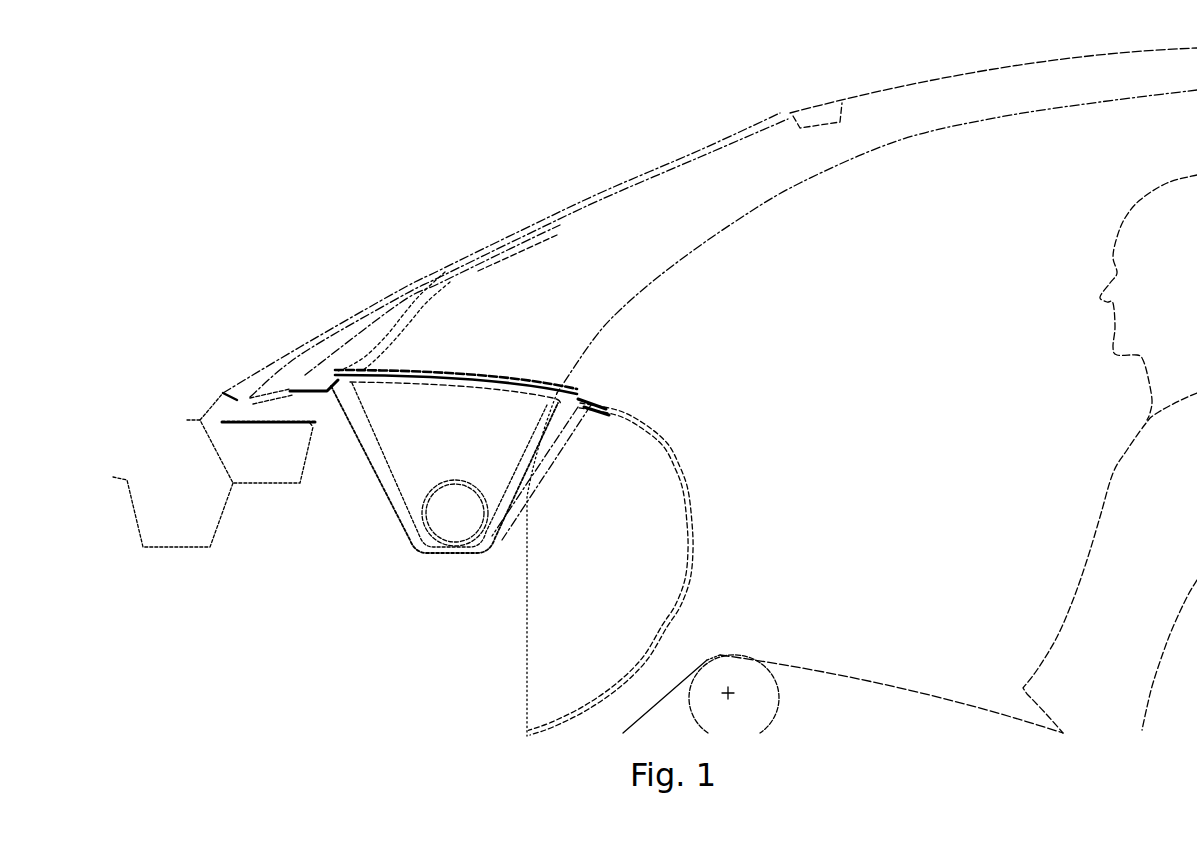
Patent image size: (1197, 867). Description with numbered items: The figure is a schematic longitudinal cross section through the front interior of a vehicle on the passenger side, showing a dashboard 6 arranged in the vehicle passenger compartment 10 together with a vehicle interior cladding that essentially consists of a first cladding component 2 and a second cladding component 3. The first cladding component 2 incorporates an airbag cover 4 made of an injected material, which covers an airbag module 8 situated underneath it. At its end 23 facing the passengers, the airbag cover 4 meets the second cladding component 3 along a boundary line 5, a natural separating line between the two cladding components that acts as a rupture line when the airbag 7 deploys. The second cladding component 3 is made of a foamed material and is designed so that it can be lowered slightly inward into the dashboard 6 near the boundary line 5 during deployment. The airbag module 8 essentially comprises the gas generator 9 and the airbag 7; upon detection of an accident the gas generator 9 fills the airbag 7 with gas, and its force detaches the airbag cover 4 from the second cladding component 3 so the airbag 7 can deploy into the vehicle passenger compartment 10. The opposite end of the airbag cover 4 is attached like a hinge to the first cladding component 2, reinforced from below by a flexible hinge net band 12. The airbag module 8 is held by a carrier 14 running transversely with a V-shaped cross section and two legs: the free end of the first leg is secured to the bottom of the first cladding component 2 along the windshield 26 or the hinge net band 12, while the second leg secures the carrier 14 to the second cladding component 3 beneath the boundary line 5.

The first cladding component 2 is at (332, 373).
The second cladding component 3 is at (638, 413).
The airbag cover 4 is at (475, 365).
The boundary line 5 is at (597, 397).
The dashboard 6 is at (647, 563).
The airbag 7 is at (402, 445).
The airbag module 8 is at (528, 496).
The gas generator 9 is at (444, 520).
The vehicle passenger compartment 10 is at (889, 402).
The hinge net band 12 is at (337, 368).
The carrier 14 is at (493, 552).
The end facing the passengers 23 is at (587, 392).
The windshield 26 is at (460, 262).